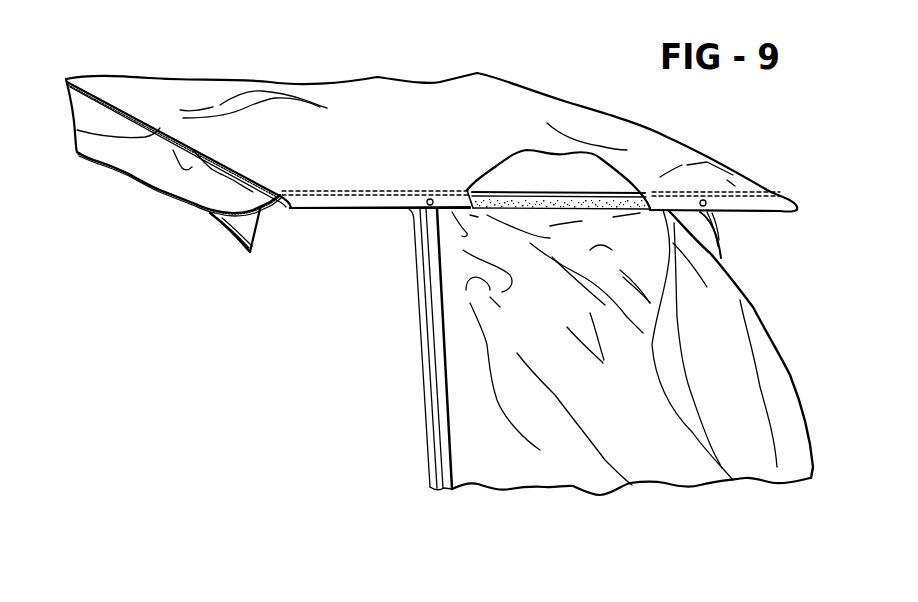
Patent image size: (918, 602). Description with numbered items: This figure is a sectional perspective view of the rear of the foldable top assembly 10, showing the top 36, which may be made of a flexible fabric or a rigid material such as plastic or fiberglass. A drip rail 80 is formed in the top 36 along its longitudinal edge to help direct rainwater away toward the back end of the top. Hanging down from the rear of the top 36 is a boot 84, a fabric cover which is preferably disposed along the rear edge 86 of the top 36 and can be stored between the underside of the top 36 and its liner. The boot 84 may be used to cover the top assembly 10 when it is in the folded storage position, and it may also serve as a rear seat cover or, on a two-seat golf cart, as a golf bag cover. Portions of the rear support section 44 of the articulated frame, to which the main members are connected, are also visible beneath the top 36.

The foldable top assembly 10 is at (704, 146).
The top 36 is at (232, 81).
The drip rails 80 is at (242, 171).
The rear edge 86 is at (362, 210).
The rear support section 44 is at (423, 353).
The boot 84 is at (762, 295).